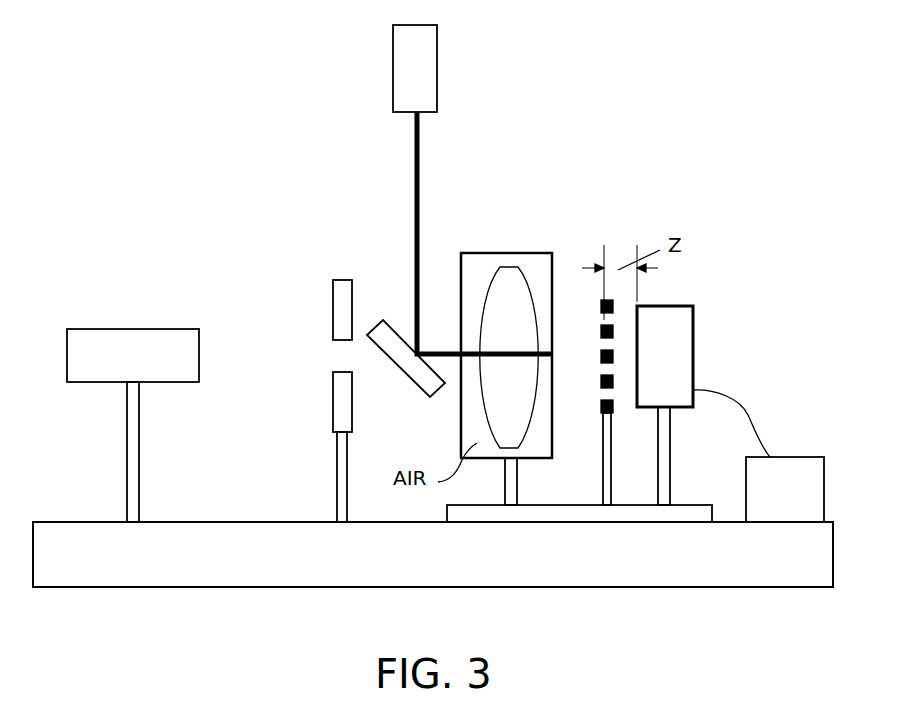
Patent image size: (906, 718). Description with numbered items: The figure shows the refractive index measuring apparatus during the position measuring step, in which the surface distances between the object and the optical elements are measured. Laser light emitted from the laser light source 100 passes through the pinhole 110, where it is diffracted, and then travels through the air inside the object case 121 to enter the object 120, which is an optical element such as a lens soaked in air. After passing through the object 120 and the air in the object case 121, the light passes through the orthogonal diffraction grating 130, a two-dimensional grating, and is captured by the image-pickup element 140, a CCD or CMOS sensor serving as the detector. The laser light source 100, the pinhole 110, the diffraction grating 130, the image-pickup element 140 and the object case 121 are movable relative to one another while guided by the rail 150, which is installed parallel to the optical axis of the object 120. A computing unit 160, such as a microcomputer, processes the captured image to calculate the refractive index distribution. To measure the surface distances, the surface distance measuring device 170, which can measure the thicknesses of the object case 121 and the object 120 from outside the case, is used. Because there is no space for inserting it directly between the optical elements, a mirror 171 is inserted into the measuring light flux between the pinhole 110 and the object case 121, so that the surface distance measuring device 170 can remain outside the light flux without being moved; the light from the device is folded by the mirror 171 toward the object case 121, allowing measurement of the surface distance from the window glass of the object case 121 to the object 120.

The laser light source 100 is at (133, 409).
The pinhole 110 is at (337, 380).
The object 120 is at (507, 283).
The object case 121 is at (463, 263).
The diffraction grating 130 is at (590, 375).
The image-pickup element 140 is at (681, 389).
The rail 150 is at (546, 512).
The computing unit 160 is at (758, 456).
The surface distance measuring device 170 is at (439, 60).
The mirror 171 is at (406, 366).